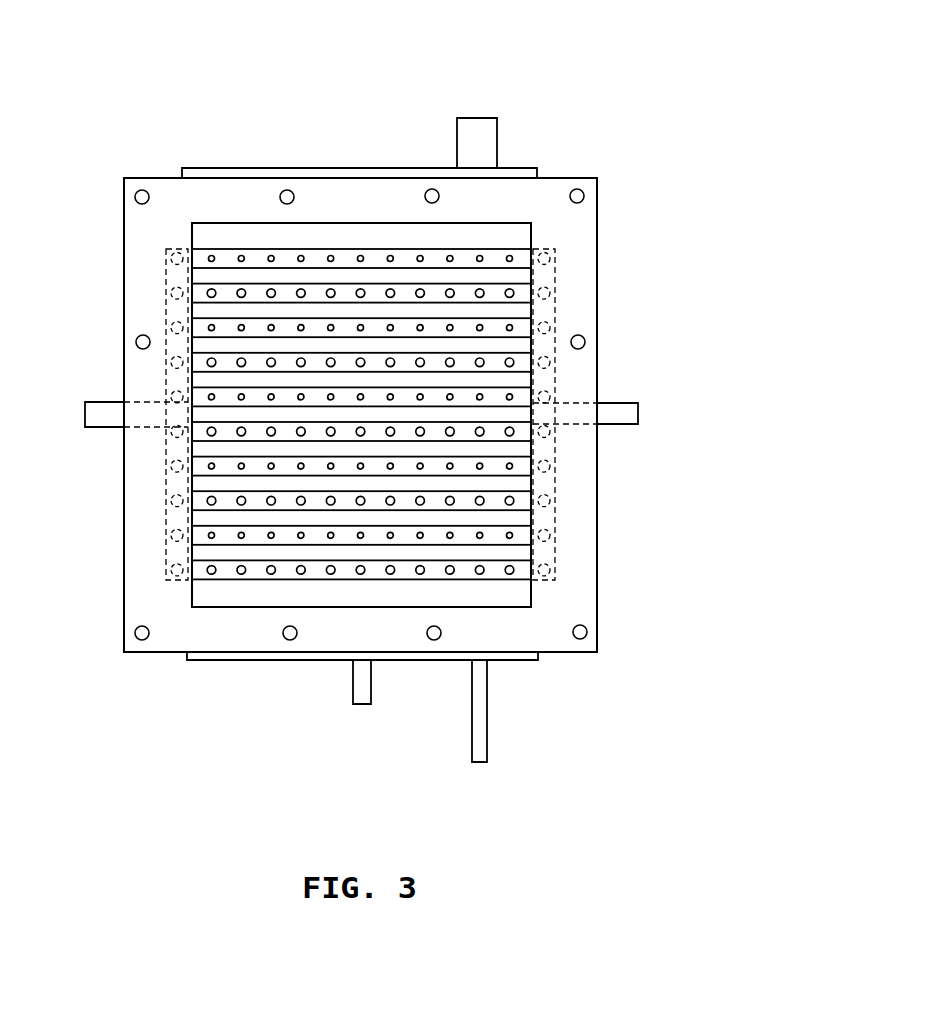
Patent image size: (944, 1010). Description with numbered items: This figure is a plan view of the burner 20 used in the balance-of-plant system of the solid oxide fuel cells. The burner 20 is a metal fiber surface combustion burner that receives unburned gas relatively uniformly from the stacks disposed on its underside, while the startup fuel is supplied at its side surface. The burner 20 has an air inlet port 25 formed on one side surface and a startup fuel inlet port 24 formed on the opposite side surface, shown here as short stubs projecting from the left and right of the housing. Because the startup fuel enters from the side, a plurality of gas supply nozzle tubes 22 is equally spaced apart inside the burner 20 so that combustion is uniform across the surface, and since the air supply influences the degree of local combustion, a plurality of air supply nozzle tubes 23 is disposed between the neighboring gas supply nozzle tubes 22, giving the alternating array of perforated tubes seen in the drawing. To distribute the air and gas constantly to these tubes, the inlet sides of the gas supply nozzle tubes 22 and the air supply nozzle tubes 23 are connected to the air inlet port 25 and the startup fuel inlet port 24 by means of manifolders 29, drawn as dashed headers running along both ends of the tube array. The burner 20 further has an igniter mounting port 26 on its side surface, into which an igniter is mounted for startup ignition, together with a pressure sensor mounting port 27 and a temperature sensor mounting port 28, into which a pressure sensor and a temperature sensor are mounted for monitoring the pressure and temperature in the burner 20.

The burner 20 is at (536, 42).
The gas supply nozzle tubes 22 is at (227, 570).
The air supply nozzle tubes 23 is at (225, 537).
The startup fuel inlet port 24 is at (617, 408).
The air inlet port 25 is at (100, 405).
The igniter mounting port 26 is at (488, 135).
The pressure sensor mounting port 27 is at (485, 715).
The temperature sensor mounting port 28 is at (353, 692).
The manifolders 29 is at (150, 412).